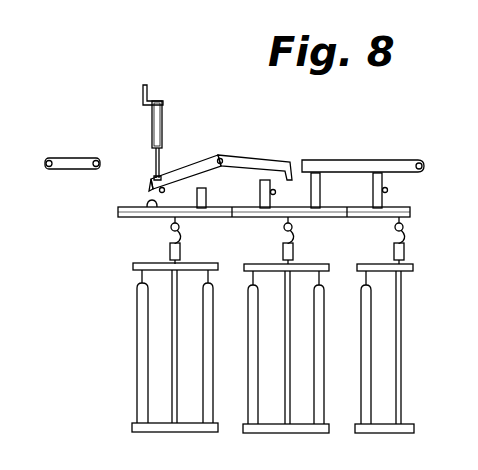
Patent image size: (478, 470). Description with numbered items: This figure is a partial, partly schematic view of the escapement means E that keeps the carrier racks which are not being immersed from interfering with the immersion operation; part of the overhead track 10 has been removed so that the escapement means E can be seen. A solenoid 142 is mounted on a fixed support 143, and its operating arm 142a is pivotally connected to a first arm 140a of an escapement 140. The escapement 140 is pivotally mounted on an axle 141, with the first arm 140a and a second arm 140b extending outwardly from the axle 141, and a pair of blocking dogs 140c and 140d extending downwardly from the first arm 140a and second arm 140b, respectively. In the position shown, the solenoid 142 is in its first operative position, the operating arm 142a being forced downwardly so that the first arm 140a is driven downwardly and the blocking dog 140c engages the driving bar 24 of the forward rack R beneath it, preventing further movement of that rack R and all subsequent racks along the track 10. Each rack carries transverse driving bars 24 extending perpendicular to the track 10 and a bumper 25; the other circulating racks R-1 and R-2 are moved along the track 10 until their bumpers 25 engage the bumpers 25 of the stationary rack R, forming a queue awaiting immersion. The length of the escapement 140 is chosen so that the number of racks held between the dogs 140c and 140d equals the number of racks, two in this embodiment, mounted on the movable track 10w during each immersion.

The bumper 25 is at (125, 213).
The movable track 10w is at (72, 157).
The overhead track 10 is at (338, 160).
The solenoid 142 is at (163, 120).
The fixed support 143 is at (143, 90).
The operating arm 142a is at (155, 160).
The escapement 140 is at (211, 155).
The first arm 140a is at (184, 172).
The second arm 140b is at (240, 162).
The blocking dog 140c is at (150, 190).
The blocking dog 140d is at (320, 183).
The axle 141 is at (222, 159).
The driving bar 24 is at (420, 190).
The escapement means E is at (290, 130).
The carrier rack R is at (140, 309).
The circulating rack R-1 is at (250, 320).
The subsequent rack R-2 is at (372, 338).